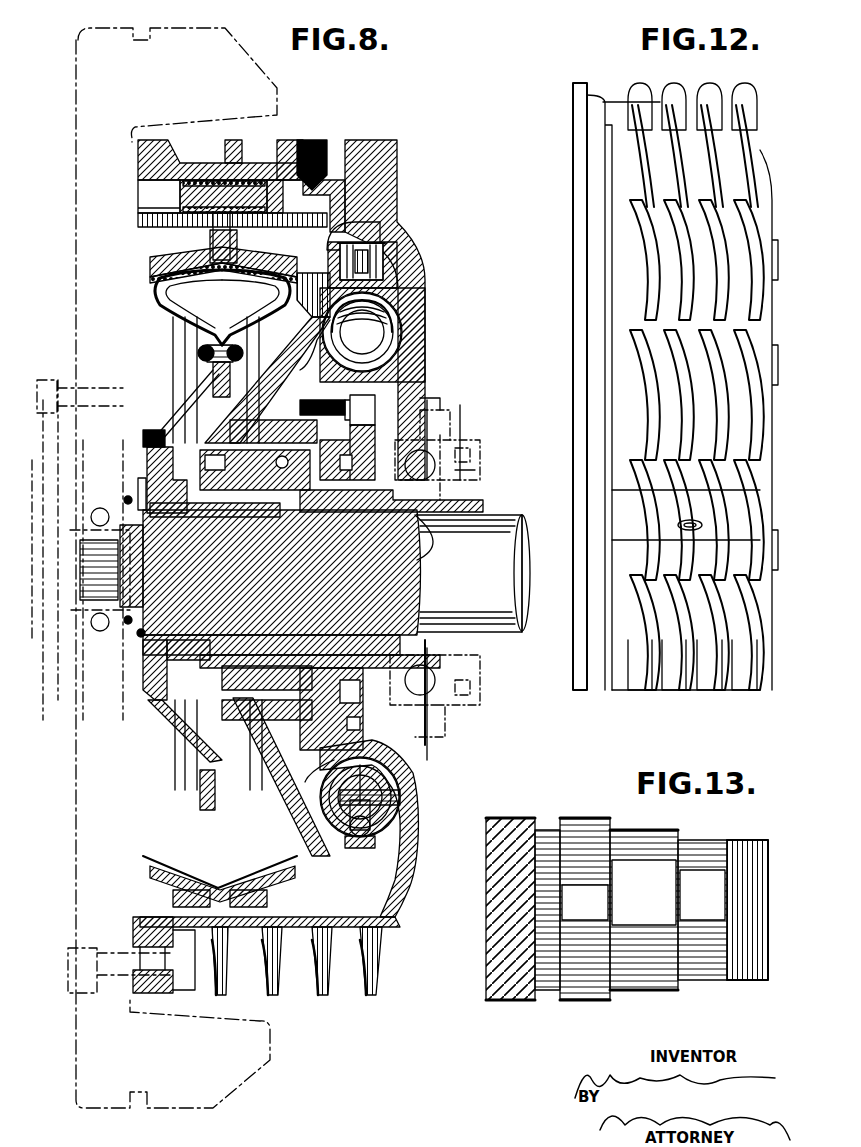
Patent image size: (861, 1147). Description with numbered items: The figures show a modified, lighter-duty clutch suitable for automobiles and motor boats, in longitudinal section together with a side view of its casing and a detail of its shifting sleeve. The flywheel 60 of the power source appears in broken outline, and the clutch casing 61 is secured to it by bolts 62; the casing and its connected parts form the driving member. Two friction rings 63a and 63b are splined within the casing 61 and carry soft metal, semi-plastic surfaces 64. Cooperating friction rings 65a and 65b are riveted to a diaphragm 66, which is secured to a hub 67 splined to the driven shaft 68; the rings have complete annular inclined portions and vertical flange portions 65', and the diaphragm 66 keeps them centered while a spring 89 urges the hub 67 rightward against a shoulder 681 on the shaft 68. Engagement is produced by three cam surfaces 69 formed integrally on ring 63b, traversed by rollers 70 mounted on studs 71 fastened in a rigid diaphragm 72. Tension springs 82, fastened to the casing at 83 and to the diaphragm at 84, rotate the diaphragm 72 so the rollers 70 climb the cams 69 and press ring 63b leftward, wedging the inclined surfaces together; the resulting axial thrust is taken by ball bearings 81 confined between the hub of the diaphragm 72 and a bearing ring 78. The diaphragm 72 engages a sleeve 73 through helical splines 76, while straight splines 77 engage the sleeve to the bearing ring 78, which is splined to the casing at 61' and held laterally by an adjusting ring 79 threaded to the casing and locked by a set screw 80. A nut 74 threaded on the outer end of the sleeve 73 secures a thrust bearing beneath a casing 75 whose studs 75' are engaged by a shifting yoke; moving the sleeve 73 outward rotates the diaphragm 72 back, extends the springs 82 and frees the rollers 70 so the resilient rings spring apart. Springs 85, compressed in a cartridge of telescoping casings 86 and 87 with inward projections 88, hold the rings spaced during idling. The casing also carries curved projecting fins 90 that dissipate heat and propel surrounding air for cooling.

In FIG. 8, the flywheel 60 is at (237, 36).
In FIG. 8, the clutch casing 61 is at (302, 544).
In FIG. 12, the clutch casing 61 is at (691, 386).
In FIG. 8, the casing spline 61' is at (313, 345).
In FIG. 8, the bolts 62 is at (125, 983).
In FIG. 8, the friction ring 63a is at (160, 266).
In FIG. 8, the friction ring 63b is at (311, 186).
In FIG. 8, the soft metal semi-plastic surfaces 64 is at (150, 273).
In FIG. 8, the friction ring 65a is at (204, 280).
In FIG. 8, the friction ring 65b is at (250, 310).
In FIG. 8, the vertical flange portions 65' is at (205, 368).
In FIG. 8, the diaphragm 66 is at (185, 395).
In FIG. 8, the hub 67 is at (165, 500).
In FIG. 8, the shaft 68 is at (500, 525).
In FIG. 8, the shoulder 681 is at (300, 640).
In FIG. 8, the cam surfaces 69 is at (335, 240).
In FIG. 8, the rollers 70 is at (392, 268).
In FIG. 8, the supporting studs 71 is at (378, 256).
In FIG. 8, the diaphragm structure 72 is at (262, 378).
In FIG. 8, the sleeve 73 is at (420, 522).
In FIG. 13, the sleeve 73 is at (650, 985).
In FIG. 8, the nut 74 is at (470, 492).
In FIG. 8, the casing 75 is at (459, 452).
In FIG. 8, the studs 75' is at (445, 579).
In FIG. 8, the helical splines 76 is at (195, 648).
In FIG. 13, the helical splines 76 is at (507, 970).
In FIG. 13, the straight splines 77 is at (583, 980).
In FIG. 8, the bearing ring 78 is at (302, 388).
In FIG. 8, the adjusting ring 79 is at (352, 458).
In FIG. 8, the set screw 80 is at (376, 408).
In FIG. 8, the ball bearings 81 is at (250, 413).
In FIG. 8, the springs 82 is at (380, 318).
In FIG. 8, the spring fastening 83 is at (368, 342).
In FIG. 8, the spring fastening 84 is at (345, 840).
In FIG. 8, the springs 85 is at (200, 188).
In FIG. 8, the telescoping casing 86 is at (172, 190).
In FIG. 8, the telescoping casing 87 is at (272, 184).
In FIG. 8, the inwardly extending projections 88 is at (180, 224).
In FIG. 8, the spring 89 is at (133, 490).
In FIG. 8, the fins 90 is at (230, 982).
In FIG. 12, the fins 90 is at (688, 420).